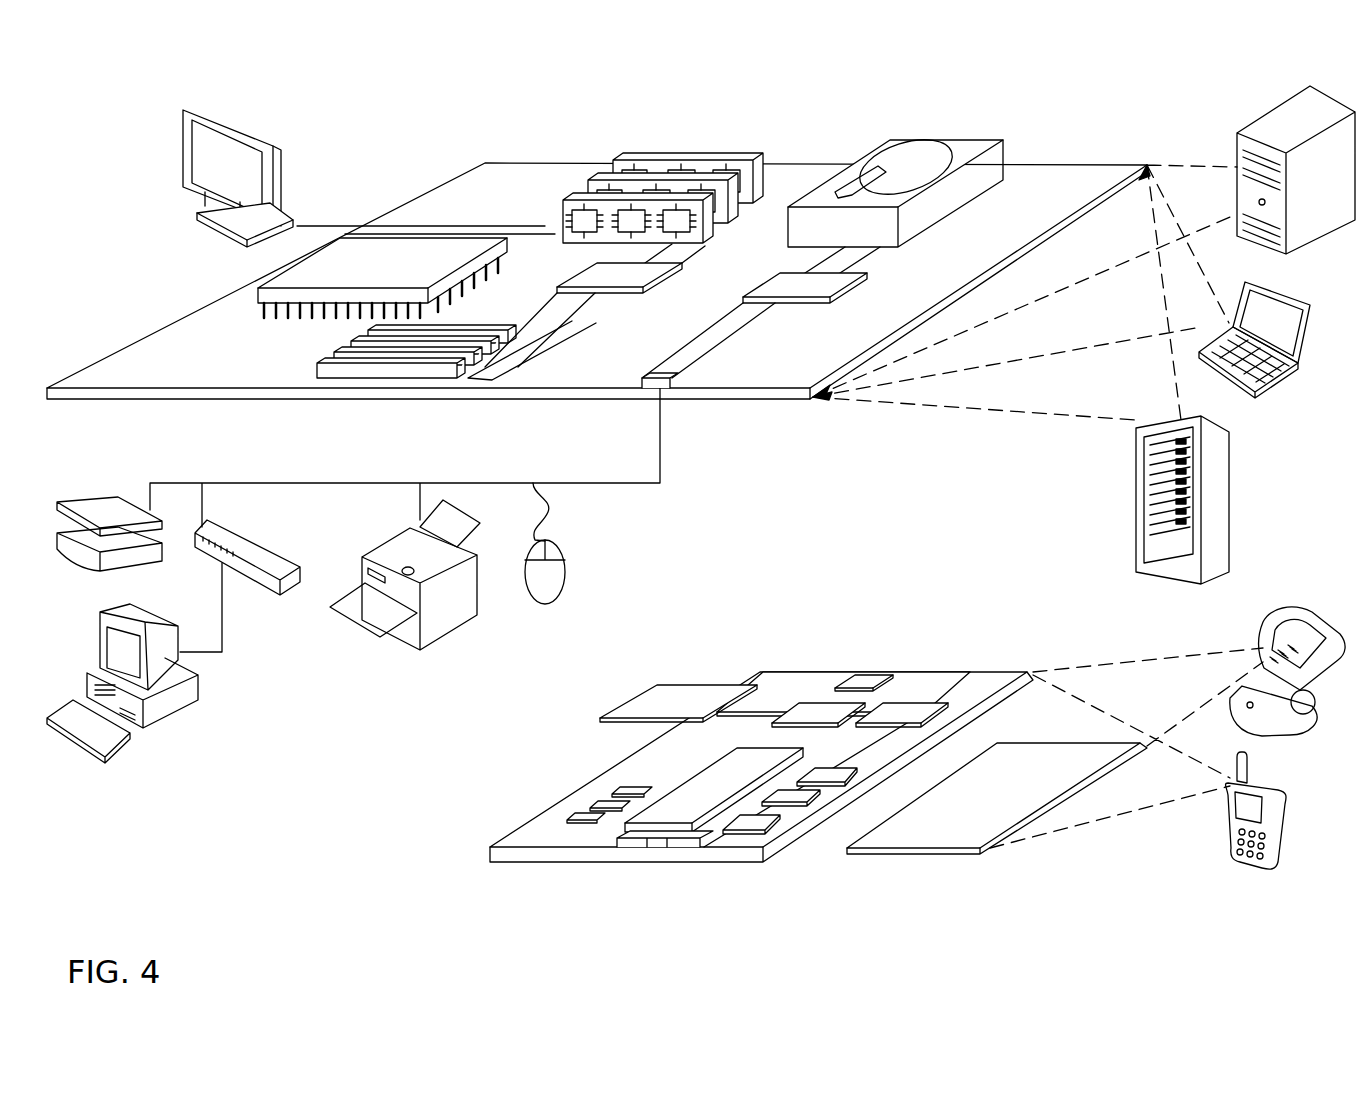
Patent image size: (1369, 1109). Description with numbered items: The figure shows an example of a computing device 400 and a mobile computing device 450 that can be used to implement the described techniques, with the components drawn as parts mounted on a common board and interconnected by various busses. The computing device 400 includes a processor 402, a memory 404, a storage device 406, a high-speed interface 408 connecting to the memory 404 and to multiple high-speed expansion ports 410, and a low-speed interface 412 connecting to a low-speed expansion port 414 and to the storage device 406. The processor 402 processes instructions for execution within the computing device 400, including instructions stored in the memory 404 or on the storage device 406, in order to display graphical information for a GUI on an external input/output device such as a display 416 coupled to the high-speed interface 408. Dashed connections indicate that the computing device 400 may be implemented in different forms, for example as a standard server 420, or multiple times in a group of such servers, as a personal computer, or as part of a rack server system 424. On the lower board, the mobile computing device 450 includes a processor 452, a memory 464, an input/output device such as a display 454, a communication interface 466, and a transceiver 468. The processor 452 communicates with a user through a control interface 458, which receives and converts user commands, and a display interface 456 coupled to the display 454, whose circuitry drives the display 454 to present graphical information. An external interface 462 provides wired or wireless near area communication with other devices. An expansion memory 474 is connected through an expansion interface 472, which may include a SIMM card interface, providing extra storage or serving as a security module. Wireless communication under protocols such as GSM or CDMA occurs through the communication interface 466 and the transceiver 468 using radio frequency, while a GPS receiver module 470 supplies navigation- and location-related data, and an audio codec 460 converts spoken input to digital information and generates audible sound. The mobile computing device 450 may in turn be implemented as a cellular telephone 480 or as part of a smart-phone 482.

The computing device 400 is at (400, 130).
The processor 402 is at (265, 292).
The memory 404 is at (625, 195).
The storage device 406 is at (890, 156).
The high-speed interface 408 is at (593, 272).
The high-speed expansion ports 410 is at (345, 355).
The low-speed interface 412 is at (785, 280).
The low-speed expansion port 414 is at (684, 392).
The display 416 is at (190, 110).
The standard server 420 is at (1237, 146).
The rack server system 424 is at (1136, 522).
The mobile computing device 450 is at (465, 857).
The processor 452 is at (685, 830).
The display 454 is at (945, 830).
The display interface 456 is at (760, 820).
The control interface 458 is at (800, 805).
The audio codec 460 is at (828, 778).
The external interface 462 is at (647, 850).
The memory 464 is at (590, 806).
The communication interface 466 is at (817, 712).
The transceiver 468 is at (903, 715).
The GPS receiver module 470 is at (875, 672).
The expansion interface 472 is at (740, 683).
The expansion memory 474 is at (657, 690).
The cellular telephone 480 is at (1268, 627).
The smart-phone 482 is at (1226, 830).